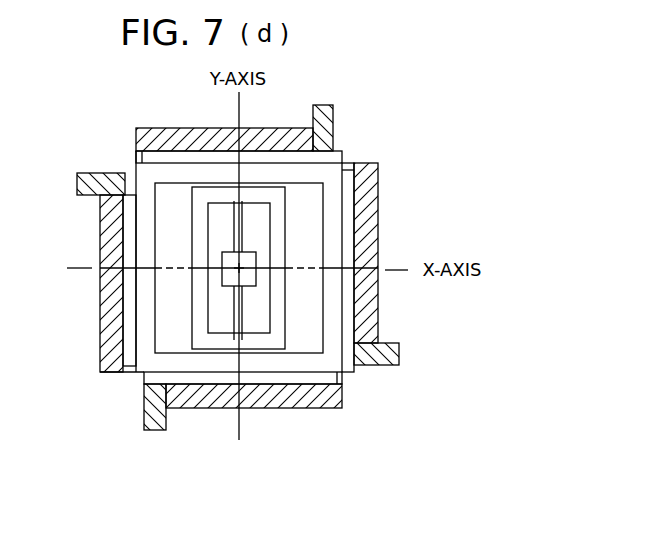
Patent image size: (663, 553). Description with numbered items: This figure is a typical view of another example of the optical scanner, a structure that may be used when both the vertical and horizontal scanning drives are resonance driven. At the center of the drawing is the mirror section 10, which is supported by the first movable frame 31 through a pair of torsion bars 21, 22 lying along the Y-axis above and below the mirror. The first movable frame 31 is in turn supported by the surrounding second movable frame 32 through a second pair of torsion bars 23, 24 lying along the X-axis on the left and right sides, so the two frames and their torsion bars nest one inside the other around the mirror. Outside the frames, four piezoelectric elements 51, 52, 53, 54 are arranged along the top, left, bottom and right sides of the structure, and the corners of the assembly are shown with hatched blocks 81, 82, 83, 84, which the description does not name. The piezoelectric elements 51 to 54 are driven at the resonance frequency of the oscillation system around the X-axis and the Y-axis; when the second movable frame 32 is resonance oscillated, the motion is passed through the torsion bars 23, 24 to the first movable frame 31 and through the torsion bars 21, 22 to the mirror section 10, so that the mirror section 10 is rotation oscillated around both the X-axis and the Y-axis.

The mirror section 10 is at (256, 250).
The torsion bar 21 is at (324, 198).
The torsion bar 22 is at (235, 313).
The torsion bar 23 is at (170, 272).
The torsion bar 24 is at (305, 270).
The first movable frame 31 is at (274, 239).
The second movable frame 32 is at (332, 256).
The piezoelectric element 51 is at (171, 132).
The piezoelectric element 52 is at (108, 298).
The piezoelectric element 53 is at (290, 409).
The piezoelectric element 54 is at (365, 320).
The corner support block 81 is at (332, 114).
The corner support block 82 is at (87, 183).
The corner support block 83 is at (155, 423).
The corner support block 84 is at (387, 353).